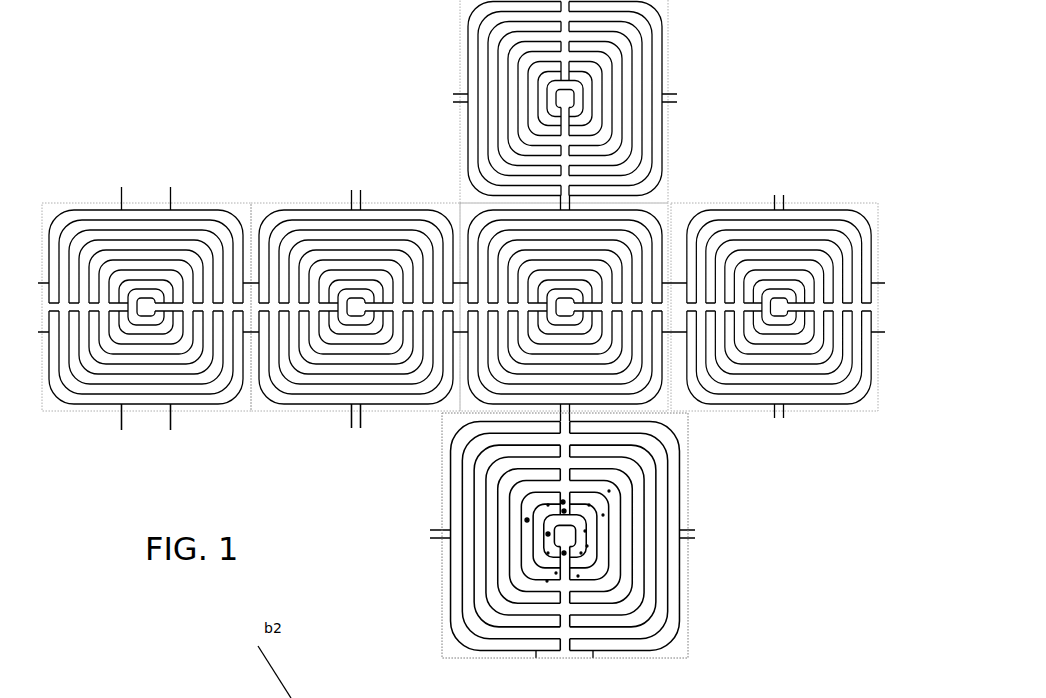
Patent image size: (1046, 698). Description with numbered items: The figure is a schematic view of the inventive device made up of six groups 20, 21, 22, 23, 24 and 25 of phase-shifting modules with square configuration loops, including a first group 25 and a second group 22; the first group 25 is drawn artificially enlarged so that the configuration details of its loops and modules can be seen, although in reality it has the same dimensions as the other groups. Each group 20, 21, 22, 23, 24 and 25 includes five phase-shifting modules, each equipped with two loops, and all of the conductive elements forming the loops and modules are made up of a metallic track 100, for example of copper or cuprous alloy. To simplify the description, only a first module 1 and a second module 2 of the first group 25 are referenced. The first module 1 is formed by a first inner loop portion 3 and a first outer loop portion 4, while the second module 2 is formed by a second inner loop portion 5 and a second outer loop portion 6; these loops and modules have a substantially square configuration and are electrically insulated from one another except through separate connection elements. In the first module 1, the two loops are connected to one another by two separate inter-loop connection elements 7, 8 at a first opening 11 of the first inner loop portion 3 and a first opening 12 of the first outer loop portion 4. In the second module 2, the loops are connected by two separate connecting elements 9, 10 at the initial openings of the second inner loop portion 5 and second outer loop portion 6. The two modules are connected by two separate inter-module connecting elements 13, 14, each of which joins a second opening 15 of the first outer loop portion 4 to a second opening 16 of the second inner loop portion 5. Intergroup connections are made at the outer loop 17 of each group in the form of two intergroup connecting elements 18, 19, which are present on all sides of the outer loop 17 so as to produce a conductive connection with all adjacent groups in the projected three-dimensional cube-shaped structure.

The first module 1 is at (548, 535).
The second module 2 is at (527, 518).
The first inner loop portion 3 is at (586, 531).
The first outer loop portion 4 is at (588, 546).
The second inner loop portion 5 is at (604, 515).
The second outer loop portion 6 is at (610, 490).
The inter-loop connection element 7 is at (564, 553).
The inter-loop connection element 8 is at (582, 554).
The connecting element 9 is at (555, 574).
The connecting element 10 is at (579, 577).
The first opening 11 is at (545, 553).
The first opening 12 is at (545, 582).
The inter-module connecting element 13 is at (545, 505).
The inter-module connecting element 14 is at (590, 505).
The second opening 15 is at (564, 511).
The second opening 16 is at (563, 502).
The outer loop 17 is at (819, 198).
The intergroup connecting element 18 is at (174, 428).
The intergroup connecting element 19 is at (113, 428).
The group 20 is at (203, 198).
The group 21 is at (298, 198).
The second group 22 is at (464, 205).
The group 23 is at (452, 50).
The group 24 is at (730, 198).
The first group 25 is at (428, 622).
The metallic track 100 is at (676, 640).